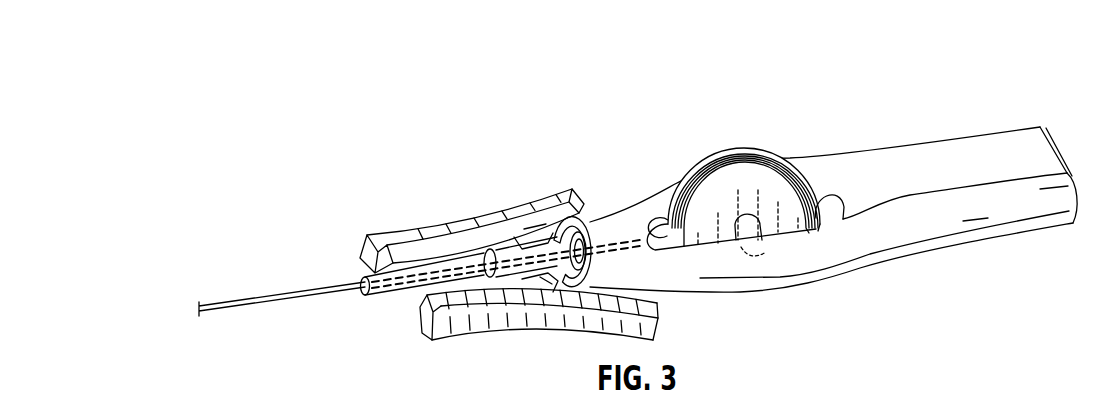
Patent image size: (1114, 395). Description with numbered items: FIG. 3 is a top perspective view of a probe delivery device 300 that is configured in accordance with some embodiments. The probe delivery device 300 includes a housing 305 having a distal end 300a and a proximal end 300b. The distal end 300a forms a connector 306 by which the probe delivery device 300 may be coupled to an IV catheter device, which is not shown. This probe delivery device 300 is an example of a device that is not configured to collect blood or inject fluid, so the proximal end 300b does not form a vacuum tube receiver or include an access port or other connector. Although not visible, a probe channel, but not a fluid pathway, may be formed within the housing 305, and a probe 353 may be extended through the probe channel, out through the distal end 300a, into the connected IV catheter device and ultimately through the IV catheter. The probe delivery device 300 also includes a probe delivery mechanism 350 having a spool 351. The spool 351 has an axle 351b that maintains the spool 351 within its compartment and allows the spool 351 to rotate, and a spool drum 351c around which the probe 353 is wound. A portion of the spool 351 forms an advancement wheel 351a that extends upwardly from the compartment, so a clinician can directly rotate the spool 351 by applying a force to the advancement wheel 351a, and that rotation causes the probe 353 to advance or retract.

The probe delivery device 300 is at (962, 58).
The distal end 300a is at (375, 177).
The proximal end 300b is at (1022, 246).
The housing 305 is at (793, 280).
The connector 306 is at (470, 220).
The probe delivery mechanism 350 is at (746, 97).
The spool 351 is at (676, 158).
The advancement wheel 351a is at (778, 184).
The axle 351b is at (743, 266).
The spool drum 351c is at (723, 147).
The probe 353 is at (288, 293).